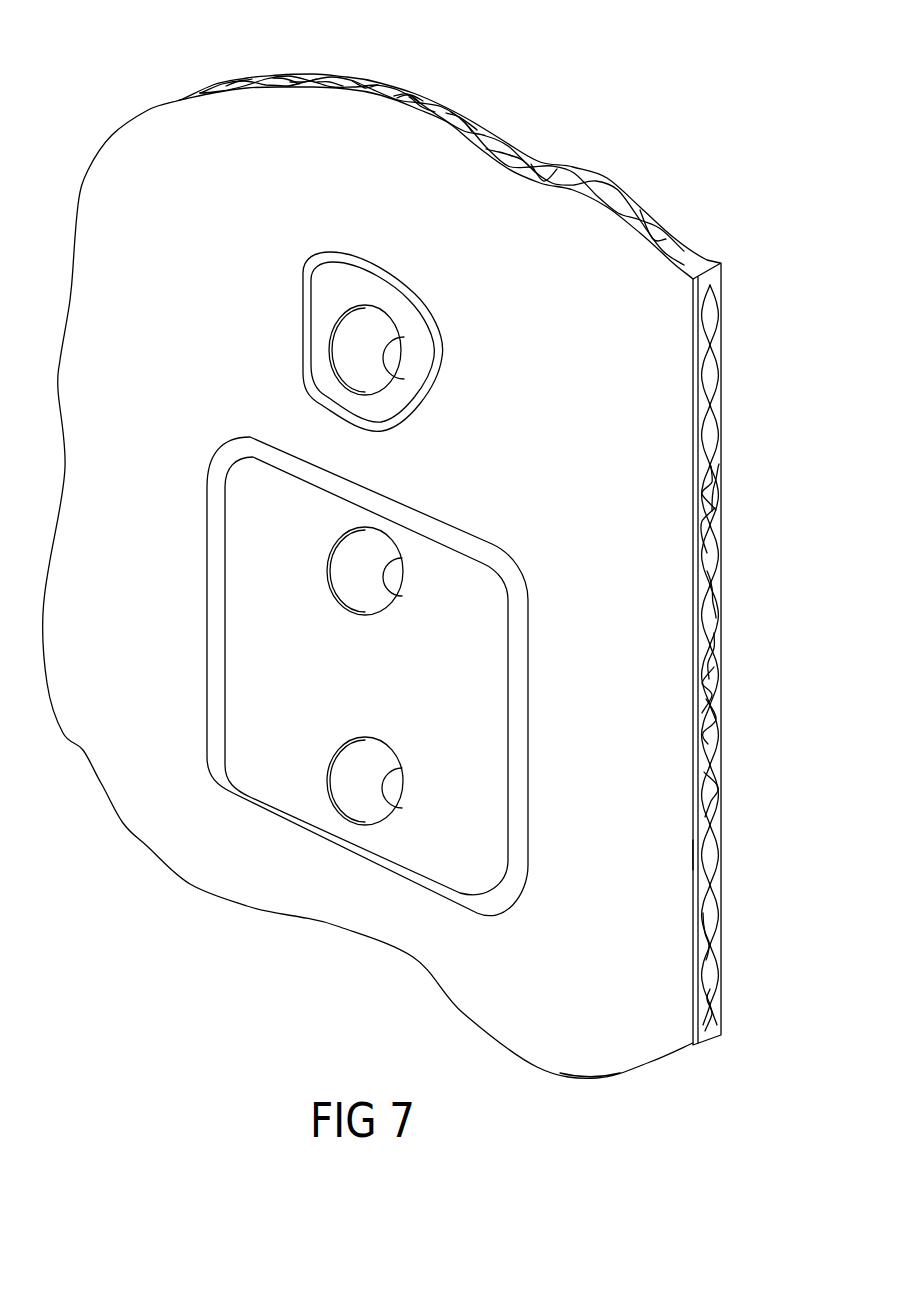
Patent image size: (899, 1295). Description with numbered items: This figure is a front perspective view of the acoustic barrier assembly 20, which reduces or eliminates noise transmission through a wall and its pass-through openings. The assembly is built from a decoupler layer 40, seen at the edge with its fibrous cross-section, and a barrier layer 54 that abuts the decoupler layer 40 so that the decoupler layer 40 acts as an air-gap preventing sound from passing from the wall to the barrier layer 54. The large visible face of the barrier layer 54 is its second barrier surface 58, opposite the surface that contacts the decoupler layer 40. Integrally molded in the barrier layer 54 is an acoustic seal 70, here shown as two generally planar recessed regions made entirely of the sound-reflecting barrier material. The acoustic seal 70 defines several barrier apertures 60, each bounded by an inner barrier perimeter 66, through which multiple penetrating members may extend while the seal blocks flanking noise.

The acoustic barrier assembly 20 is at (78, 106).
The decoupler layer 40 is at (708, 483).
The barrier layer 54 is at (699, 853).
The second barrier surface 58 is at (483, 980).
The barrier aperture 60 is at (362, 349).
The inner barrier perimeter 66 is at (388, 366).
The acoustic seal 70 is at (328, 295).